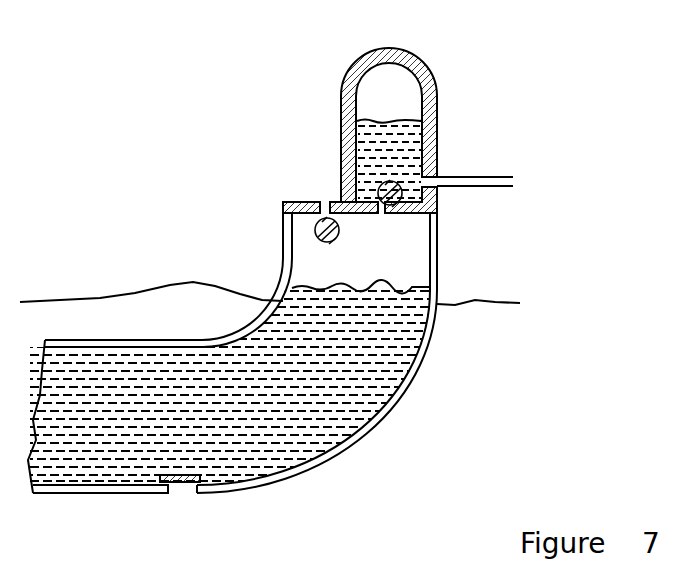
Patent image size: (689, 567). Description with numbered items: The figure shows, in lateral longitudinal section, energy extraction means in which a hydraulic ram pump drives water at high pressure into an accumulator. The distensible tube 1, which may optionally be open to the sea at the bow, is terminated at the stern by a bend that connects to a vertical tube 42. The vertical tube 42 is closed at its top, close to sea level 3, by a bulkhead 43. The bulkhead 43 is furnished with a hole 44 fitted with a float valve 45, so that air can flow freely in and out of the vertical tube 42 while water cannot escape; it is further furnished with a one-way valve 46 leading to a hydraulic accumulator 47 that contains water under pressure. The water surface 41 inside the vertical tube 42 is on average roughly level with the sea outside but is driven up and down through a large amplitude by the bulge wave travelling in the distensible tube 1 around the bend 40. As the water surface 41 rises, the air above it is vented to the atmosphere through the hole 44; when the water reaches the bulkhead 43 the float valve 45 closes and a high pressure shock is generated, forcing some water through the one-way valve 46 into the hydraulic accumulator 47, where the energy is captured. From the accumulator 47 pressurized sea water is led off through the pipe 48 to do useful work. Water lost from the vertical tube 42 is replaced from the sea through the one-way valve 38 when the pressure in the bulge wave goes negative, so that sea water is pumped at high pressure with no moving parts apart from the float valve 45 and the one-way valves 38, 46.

The distensible tube 1 is at (67, 493).
The ground level 3 is at (115, 295).
The one-way valve 38 is at (177, 480).
The elbow outer wall 40 is at (297, 470).
The water surface 41 is at (322, 287).
The vertical tube 42 is at (437, 242).
The bulkhead 43 is at (295, 202).
The hole 44 is at (325, 195).
The float valve 45 is at (316, 227).
The one-way valve 46 is at (399, 186).
The hydraulic accumulator 47 is at (423, 63).
The pipe 48 is at (497, 175).